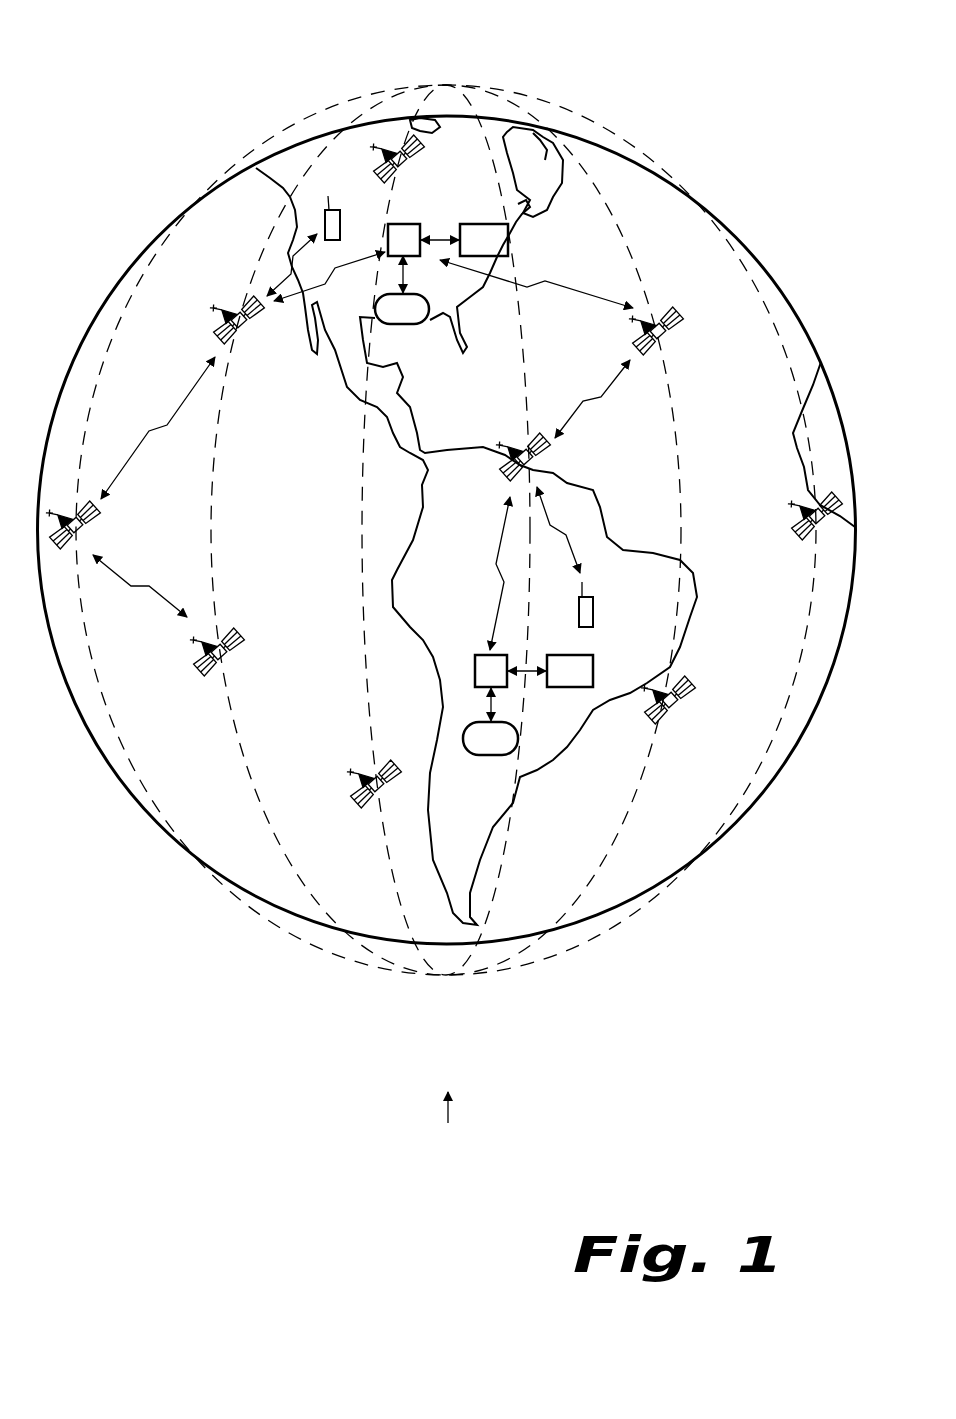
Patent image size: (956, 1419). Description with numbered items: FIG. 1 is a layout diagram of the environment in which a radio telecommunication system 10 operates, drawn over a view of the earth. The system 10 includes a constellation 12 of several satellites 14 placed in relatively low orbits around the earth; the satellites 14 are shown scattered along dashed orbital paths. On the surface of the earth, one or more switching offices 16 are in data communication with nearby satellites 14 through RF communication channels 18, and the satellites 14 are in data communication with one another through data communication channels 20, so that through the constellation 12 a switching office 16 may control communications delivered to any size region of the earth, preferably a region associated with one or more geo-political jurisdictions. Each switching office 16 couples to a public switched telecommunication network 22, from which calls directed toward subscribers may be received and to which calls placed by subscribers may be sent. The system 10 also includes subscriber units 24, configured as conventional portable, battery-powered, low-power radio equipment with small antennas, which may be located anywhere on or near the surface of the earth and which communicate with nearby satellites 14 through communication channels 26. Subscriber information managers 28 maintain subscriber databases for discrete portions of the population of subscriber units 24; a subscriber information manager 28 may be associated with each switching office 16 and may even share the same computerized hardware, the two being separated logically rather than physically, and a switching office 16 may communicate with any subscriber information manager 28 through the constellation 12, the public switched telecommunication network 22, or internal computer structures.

The radio telecommunication system 10 is at (446, 1126).
The constellation 12 is at (452, 88).
The satellites 14 is at (239, 346).
The switching office 16 is at (410, 224).
The RF communication channels 18 is at (326, 282).
The data communication channels 20 is at (175, 409).
The public switched telecommunication network 22 is at (404, 326).
The subscriber unit 24 is at (338, 210).
The communication channels 26 is at (285, 292).
The subscriber information manager 28 is at (510, 242).